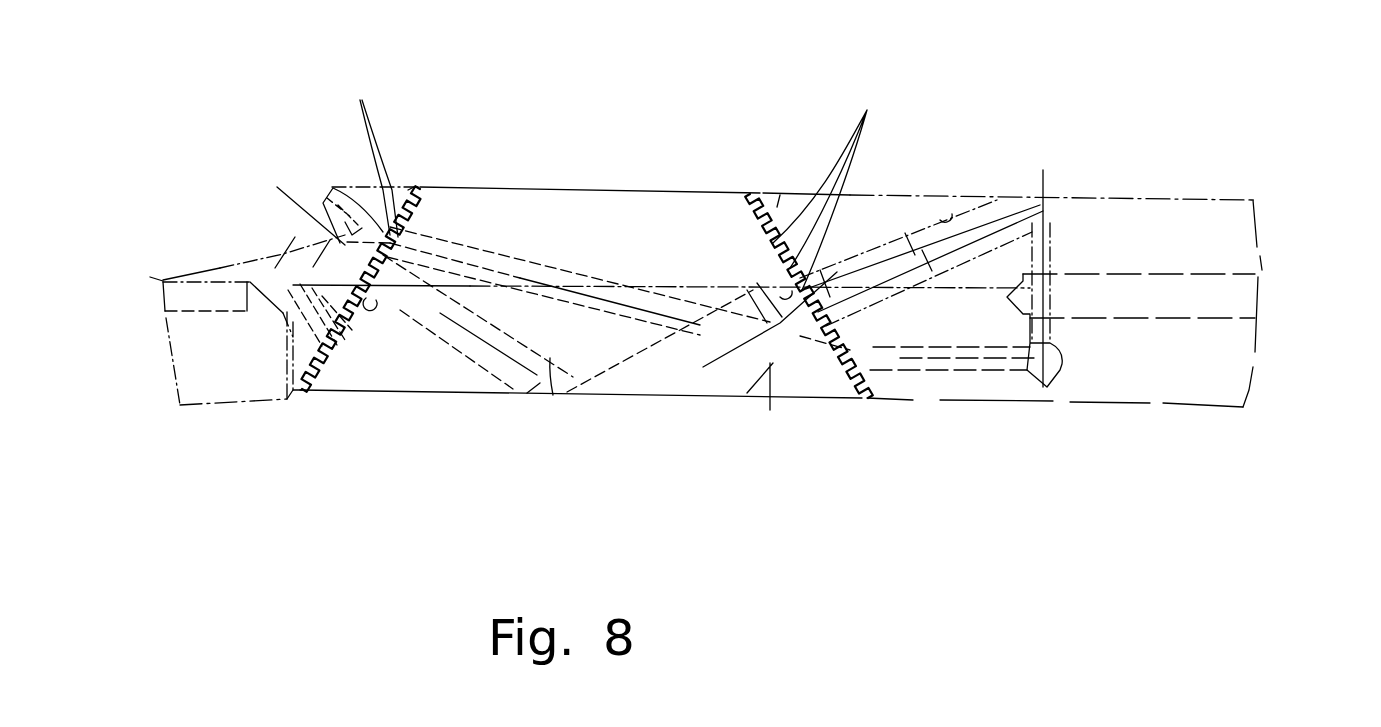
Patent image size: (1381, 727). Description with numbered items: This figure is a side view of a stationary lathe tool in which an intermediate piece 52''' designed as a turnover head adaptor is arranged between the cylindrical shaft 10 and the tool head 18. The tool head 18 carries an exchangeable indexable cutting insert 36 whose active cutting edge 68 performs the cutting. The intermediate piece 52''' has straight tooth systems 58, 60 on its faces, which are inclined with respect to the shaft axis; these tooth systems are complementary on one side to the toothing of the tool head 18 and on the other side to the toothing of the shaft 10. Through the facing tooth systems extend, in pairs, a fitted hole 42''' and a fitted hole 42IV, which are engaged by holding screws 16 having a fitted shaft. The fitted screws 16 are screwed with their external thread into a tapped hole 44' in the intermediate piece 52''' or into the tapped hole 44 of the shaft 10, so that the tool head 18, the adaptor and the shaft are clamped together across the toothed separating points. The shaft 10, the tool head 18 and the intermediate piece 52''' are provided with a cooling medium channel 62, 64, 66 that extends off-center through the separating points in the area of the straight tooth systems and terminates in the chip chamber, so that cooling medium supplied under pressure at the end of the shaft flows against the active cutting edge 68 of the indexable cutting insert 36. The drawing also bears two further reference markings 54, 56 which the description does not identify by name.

The cylindrical shaft 10 is at (1230, 253).
The fitted screw 16 is at (266, 176).
The tool head 18 is at (269, 340).
The indexable cutting insert 36 is at (198, 302).
The fitted hole 42''' is at (387, 375).
The fitted hole 42IV is at (828, 260).
The tapped hole 44 is at (928, 208).
The tapped hole 44' is at (527, 361).
The intermediate piece 52''' is at (781, 235).
The external thread 54 is at (408, 190).
The external thread 56 is at (780, 195).
The straight tooth system 58 is at (370, 151).
The straight tooth system 60 is at (835, 184).
The cooling medium channel 62 is at (1162, 293).
The cooling medium channel 64 is at (313, 187).
The cooling medium channel 66 is at (550, 280).
The active cutting edge 68 is at (163, 282).